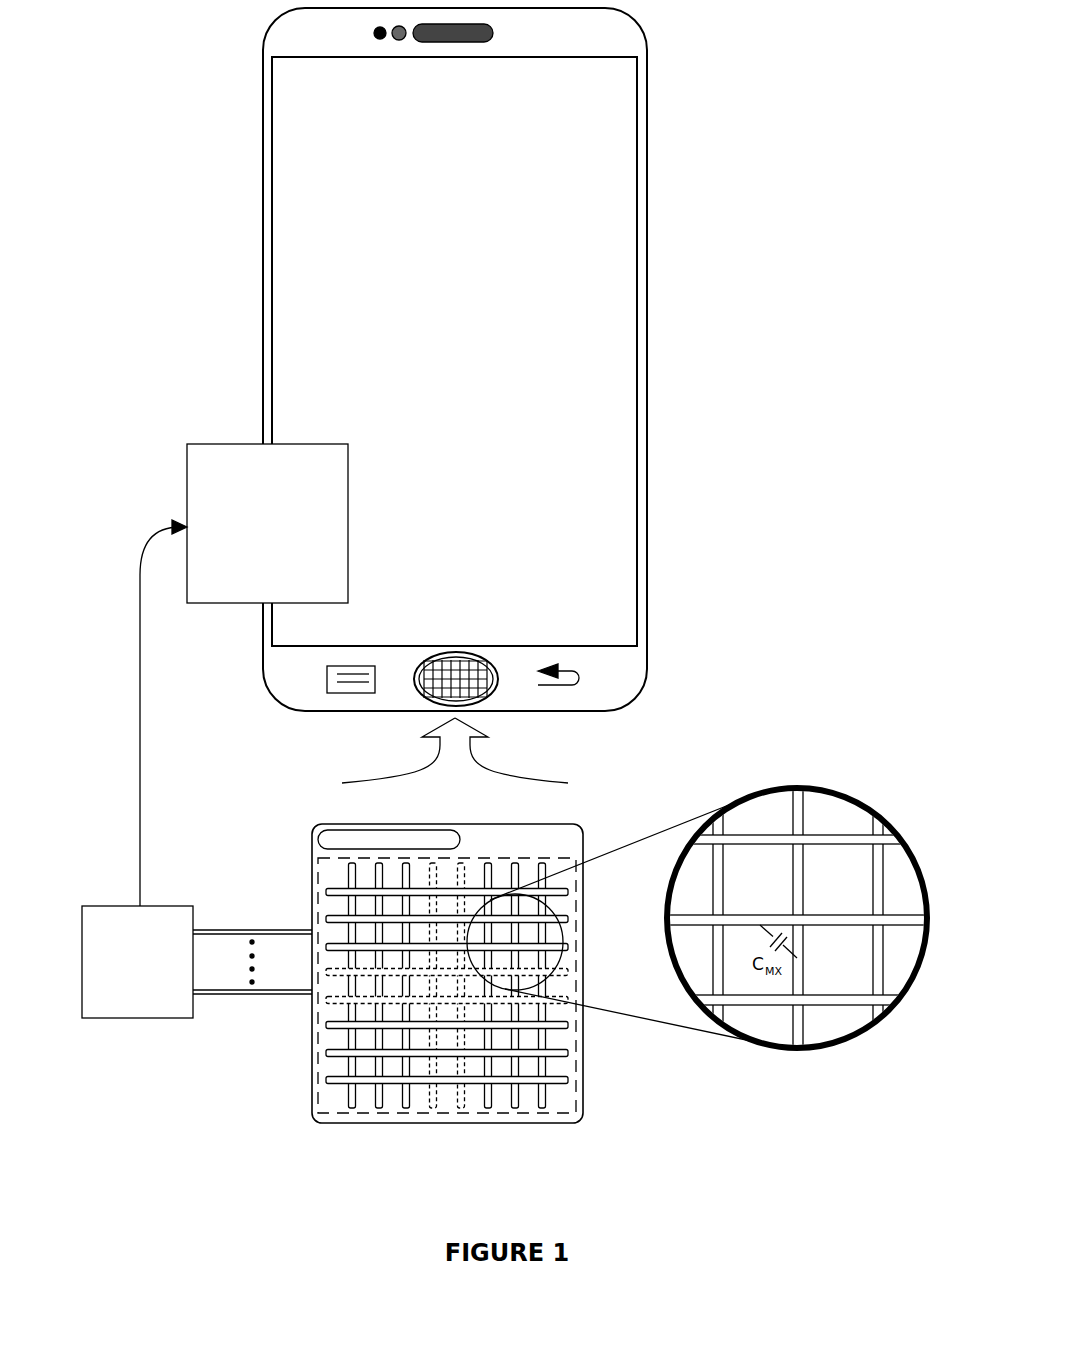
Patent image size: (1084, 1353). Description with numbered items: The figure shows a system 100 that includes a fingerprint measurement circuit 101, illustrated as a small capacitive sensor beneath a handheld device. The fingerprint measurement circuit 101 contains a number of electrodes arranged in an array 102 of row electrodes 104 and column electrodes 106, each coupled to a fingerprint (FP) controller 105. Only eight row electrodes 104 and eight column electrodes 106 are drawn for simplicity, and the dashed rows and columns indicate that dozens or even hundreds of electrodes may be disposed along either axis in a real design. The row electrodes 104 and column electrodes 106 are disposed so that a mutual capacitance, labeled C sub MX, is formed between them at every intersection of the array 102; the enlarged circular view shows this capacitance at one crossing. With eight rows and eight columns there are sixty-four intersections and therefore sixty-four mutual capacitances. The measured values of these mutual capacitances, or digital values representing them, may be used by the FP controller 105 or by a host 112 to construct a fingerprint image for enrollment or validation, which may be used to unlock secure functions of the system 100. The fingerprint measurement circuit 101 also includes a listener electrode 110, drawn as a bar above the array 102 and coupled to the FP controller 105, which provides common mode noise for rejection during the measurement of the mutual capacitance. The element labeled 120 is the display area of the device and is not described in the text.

The system 100 is at (785, 179).
The fingerprint measurement circuit 101 is at (455, 400).
The array 102 is at (576, 1086).
The row electrodes 104 is at (575, 1043).
The fingerprint (FP) controller 105 is at (121, 997).
The column electrodes 106 is at (547, 1108).
The listener electrode 110 is at (460, 840).
The host 112 is at (251, 546).
The display 120 is at (438, 321).